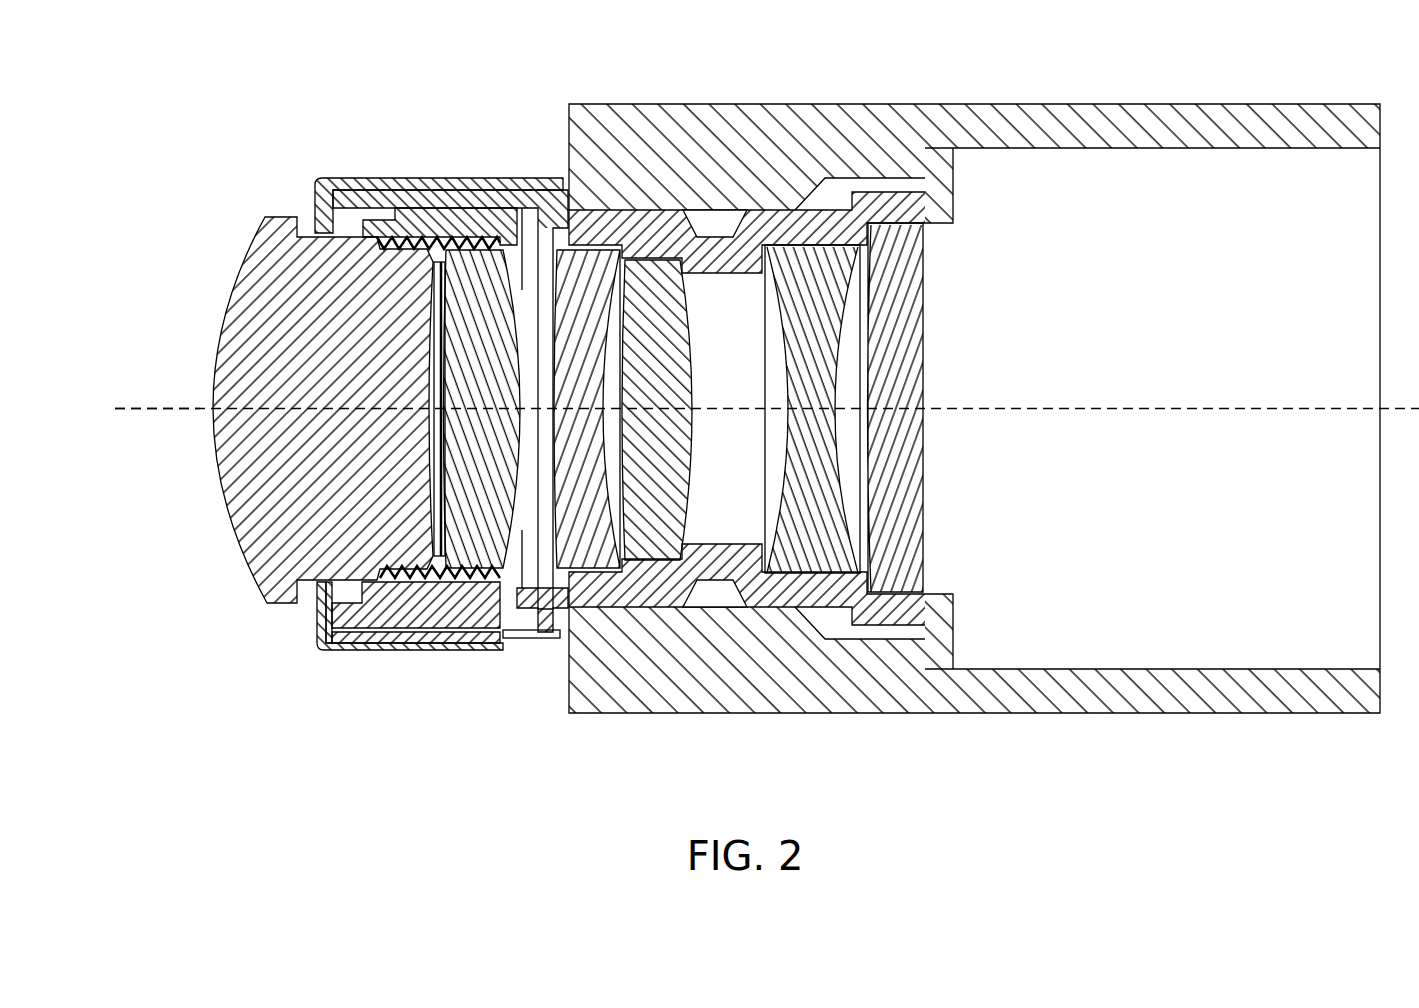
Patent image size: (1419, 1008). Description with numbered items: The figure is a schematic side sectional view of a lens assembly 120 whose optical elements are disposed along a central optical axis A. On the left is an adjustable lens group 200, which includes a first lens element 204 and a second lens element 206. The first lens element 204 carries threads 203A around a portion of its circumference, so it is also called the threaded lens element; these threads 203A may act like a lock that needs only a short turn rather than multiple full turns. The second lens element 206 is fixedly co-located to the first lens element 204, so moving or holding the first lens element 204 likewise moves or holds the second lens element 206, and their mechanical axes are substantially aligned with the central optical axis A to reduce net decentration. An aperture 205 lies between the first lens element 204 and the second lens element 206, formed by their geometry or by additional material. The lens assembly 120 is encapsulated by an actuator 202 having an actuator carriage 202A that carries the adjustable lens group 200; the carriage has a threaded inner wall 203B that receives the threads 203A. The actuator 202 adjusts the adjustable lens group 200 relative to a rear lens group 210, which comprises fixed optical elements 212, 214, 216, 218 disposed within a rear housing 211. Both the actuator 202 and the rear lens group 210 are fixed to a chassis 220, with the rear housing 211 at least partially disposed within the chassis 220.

The lens assembly 120 is at (165, 98).
The adjustable lens group 200 is at (396, 207).
The actuator 202 is at (523, 178).
The actuator carriage 202A is at (378, 240).
The threads 203A is at (402, 580).
The threaded inner wall 203B is at (378, 580).
The first lens element 204 is at (283, 214).
The aperture 205 is at (422, 386).
The second lens element 206 is at (468, 578).
The rear lens group 210 is at (625, 210).
The rear housing 211 is at (752, 253).
The fixed optical element 212 is at (578, 560).
The fixed optical element 214 is at (655, 555).
The fixed optical element 216 is at (805, 565).
The fixed optical element 218 is at (892, 595).
The chassis 220 is at (992, 104).
The central optical axis A is at (162, 407).